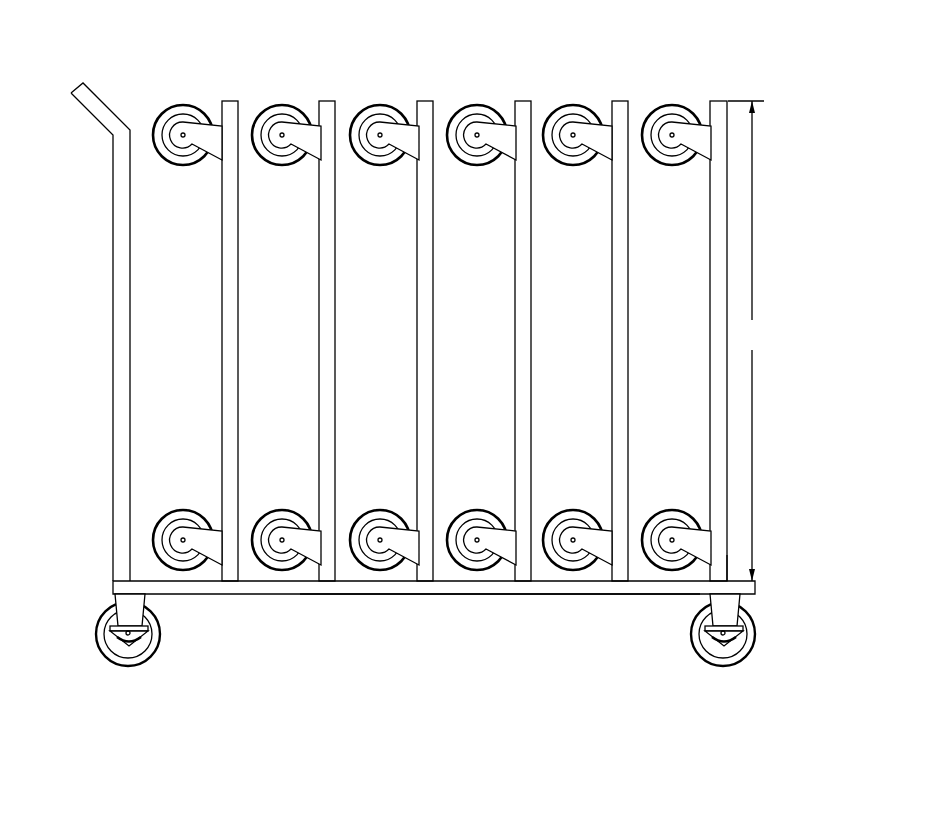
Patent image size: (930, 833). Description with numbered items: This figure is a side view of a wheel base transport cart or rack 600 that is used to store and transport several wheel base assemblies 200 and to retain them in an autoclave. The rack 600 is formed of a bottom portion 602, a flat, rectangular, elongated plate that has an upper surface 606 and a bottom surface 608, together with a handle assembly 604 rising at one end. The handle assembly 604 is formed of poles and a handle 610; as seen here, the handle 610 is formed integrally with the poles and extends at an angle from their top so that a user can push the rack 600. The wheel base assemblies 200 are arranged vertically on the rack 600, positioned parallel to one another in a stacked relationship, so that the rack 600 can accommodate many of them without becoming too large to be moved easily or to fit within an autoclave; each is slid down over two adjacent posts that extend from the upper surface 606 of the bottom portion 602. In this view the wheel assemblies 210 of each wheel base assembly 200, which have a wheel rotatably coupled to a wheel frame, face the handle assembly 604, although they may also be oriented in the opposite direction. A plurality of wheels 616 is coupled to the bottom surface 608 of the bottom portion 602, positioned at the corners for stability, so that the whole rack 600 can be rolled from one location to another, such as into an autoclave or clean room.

The wheel base transport cart or rack 600 is at (231, 654).
The handle 610 is at (93, 95).
The handle assembly 604 is at (120, 334).
The wheel base assembly 200 is at (600, 88).
The wheel assembly 210 is at (270, 106).
The bottom portion 602 is at (756, 585).
The bottom surface 608 is at (615, 596).
The upper surface 606 is at (731, 577).
The wheels 616 is at (97, 642).